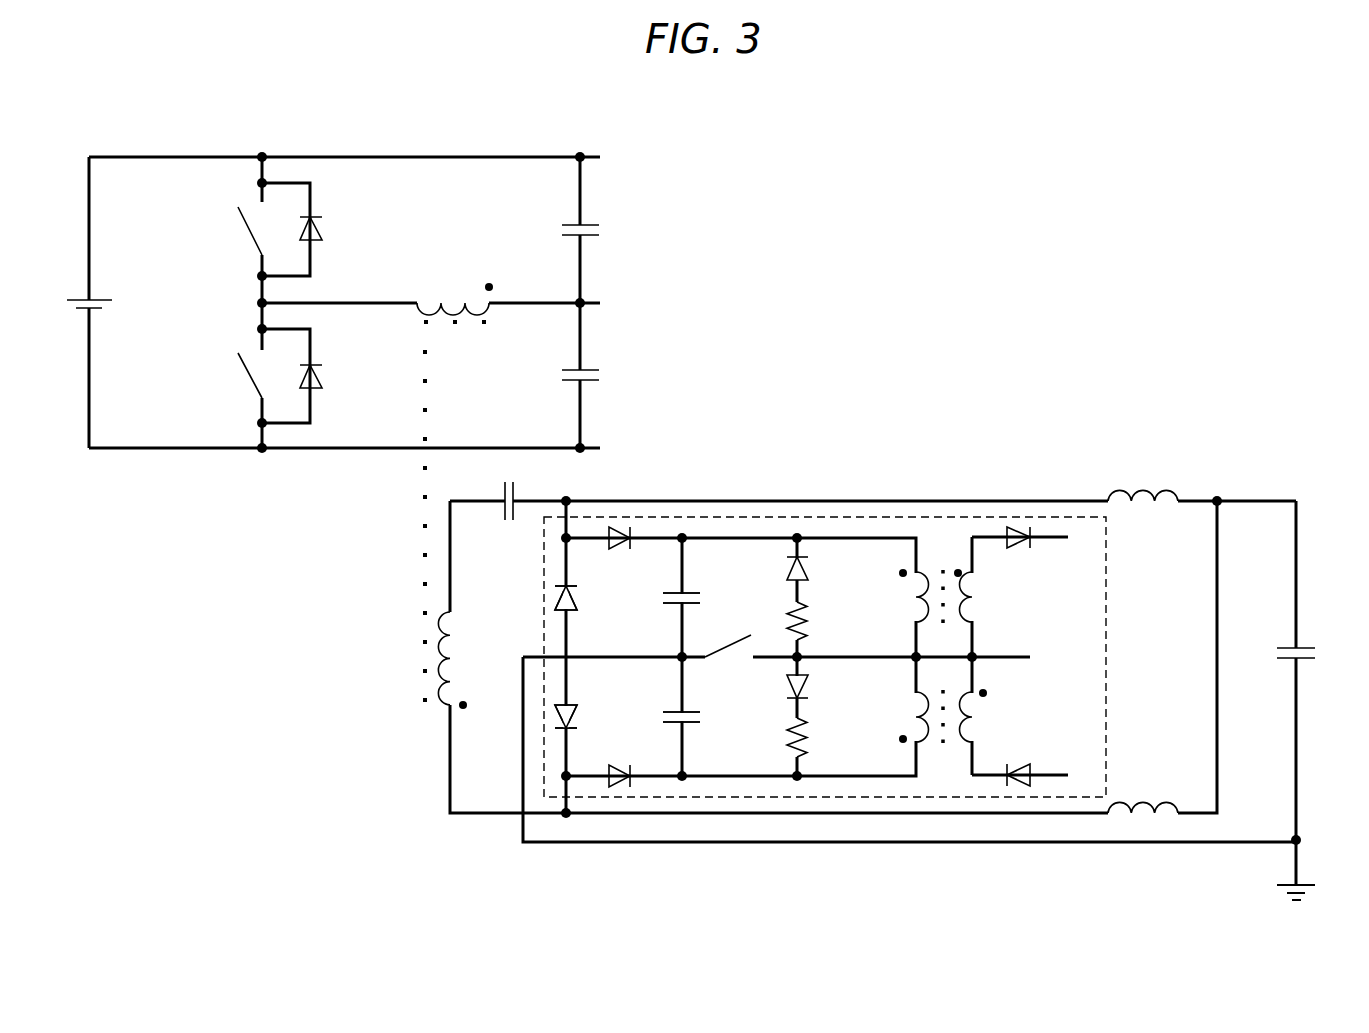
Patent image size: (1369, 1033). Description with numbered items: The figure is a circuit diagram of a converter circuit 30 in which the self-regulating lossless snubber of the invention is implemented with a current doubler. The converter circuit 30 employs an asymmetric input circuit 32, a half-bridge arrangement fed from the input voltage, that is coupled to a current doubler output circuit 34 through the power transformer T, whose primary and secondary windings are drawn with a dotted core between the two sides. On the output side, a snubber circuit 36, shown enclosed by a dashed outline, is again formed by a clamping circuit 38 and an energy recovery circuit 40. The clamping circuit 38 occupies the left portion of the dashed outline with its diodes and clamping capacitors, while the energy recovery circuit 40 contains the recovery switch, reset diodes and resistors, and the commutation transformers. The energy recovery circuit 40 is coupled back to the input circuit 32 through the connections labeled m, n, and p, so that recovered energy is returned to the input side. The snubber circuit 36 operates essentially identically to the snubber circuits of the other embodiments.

The converter circuit 30 is at (874, 287).
The asymmetric input circuit 32 is at (244, 486).
The current doubler output circuit 34 is at (1031, 467).
The snubber circuit 36 is at (1122, 653).
The clamping circuit 38 is at (636, 627).
The energy recovery circuit 40 is at (868, 713).